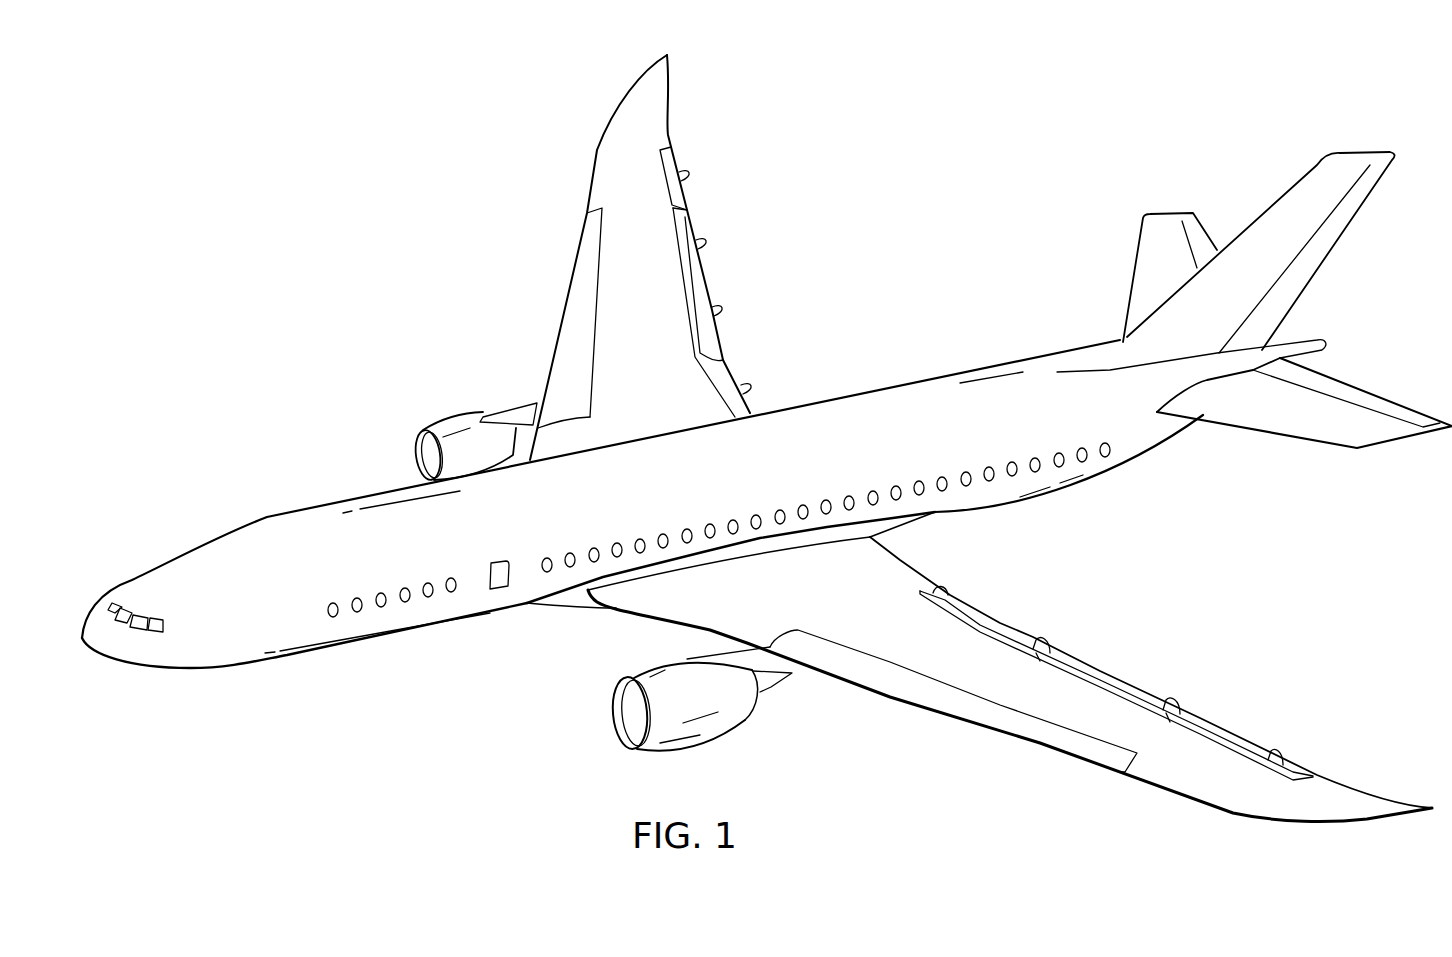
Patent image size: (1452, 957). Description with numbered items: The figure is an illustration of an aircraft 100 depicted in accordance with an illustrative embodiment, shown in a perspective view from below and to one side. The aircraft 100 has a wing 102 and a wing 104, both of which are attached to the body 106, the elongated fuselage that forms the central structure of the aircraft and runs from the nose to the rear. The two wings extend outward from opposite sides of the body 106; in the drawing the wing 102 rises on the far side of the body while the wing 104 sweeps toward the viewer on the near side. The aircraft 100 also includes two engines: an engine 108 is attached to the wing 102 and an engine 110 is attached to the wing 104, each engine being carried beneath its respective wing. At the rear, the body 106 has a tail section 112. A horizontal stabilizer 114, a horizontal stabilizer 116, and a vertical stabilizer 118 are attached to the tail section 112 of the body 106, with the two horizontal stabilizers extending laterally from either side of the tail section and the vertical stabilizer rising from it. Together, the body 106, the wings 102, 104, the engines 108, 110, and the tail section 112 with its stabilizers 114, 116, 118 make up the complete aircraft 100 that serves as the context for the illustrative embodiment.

The aircraft 100 is at (370, 213).
The wing 102 is at (598, 143).
The wing 104 is at (1308, 822).
The body 106 is at (268, 514).
The engine 108 is at (462, 408).
The engine 110 is at (703, 738).
The tail section 112 is at (1203, 478).
The horizontal stabilizer 114 is at (1128, 272).
The horizontal stabilizer 116 is at (1310, 437).
The vertical stabilizer 118 is at (1336, 243).